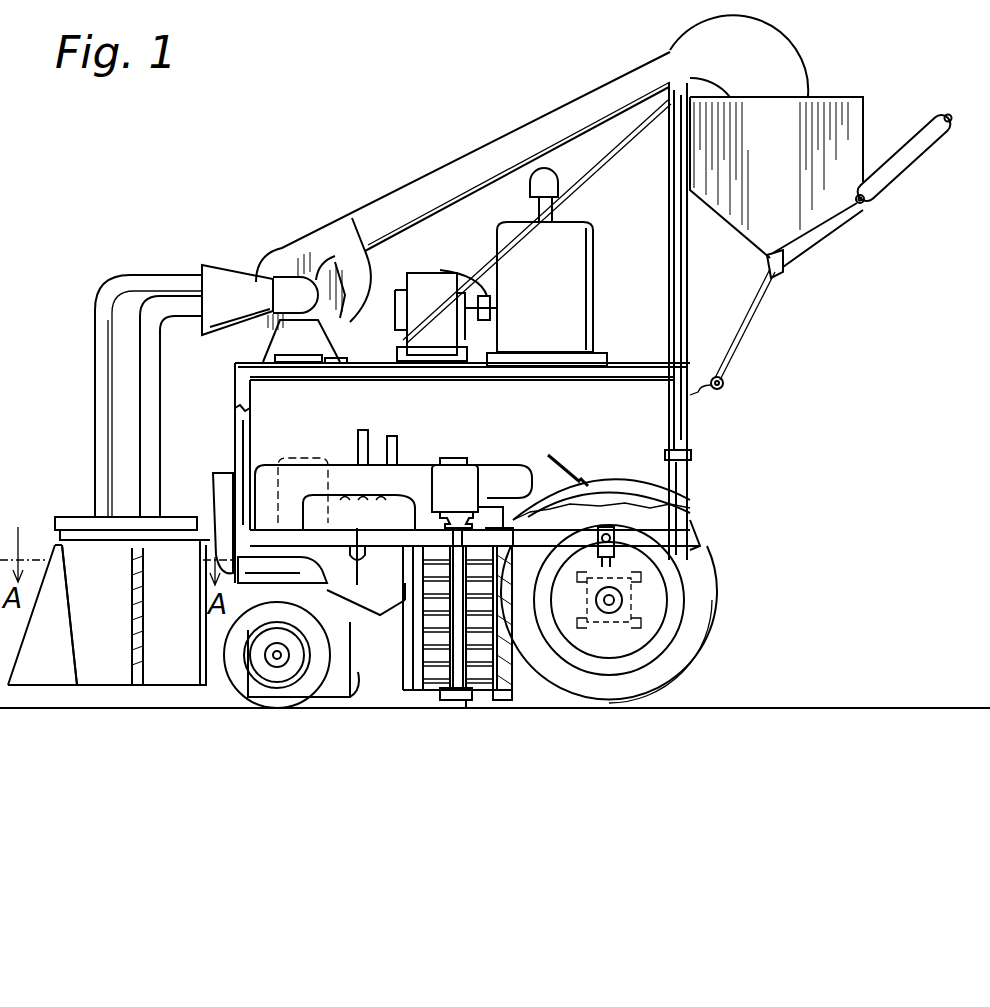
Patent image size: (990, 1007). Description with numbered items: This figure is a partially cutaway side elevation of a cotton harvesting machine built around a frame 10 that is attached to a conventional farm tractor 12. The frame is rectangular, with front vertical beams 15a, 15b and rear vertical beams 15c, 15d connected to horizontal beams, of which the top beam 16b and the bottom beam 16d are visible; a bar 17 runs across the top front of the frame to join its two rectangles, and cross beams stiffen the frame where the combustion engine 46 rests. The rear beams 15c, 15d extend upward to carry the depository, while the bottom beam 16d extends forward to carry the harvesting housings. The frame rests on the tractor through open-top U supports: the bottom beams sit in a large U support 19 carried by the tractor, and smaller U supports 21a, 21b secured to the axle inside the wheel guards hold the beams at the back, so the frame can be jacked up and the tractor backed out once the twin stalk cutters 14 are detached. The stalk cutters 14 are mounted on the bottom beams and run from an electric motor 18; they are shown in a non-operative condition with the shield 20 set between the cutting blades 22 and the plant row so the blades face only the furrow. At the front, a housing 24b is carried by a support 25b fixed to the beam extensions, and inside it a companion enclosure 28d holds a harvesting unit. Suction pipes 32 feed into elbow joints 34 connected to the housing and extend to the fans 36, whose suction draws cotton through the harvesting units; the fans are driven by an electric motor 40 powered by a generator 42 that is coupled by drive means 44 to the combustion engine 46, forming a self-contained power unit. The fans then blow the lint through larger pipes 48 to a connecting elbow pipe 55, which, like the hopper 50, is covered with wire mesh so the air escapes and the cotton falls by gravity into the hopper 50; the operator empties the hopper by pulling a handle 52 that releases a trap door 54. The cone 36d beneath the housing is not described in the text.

The frame 10 is at (690, 438).
The farm tractor 12 is at (419, 457).
The twin stalk cutters 14 is at (448, 690).
The vertical beam 15a is at (238, 408).
The vertical beam 15b is at (246, 446).
The vertical beam 15c is at (691, 456).
The vertical beam 15d is at (669, 436).
The horizontal beam 16b is at (505, 372).
The horizontal beam 16d is at (470, 558).
The bar 17 is at (256, 371).
The electric motor 18 is at (487, 463).
The U support 19 is at (217, 500).
The shield 20 is at (410, 657).
The U support 21a is at (566, 545).
The U support 21b is at (700, 530).
The cutting blades 22 is at (492, 698).
The housing 24b is at (130, 688).
The support 25b is at (105, 548).
The companion enclosure 28d is at (150, 688).
The suction pipes 32 is at (155, 411).
The elbow joints 34 is at (221, 270).
The fans 36 is at (352, 302).
The nozzle cone 36d is at (50, 688).
The electric motor 40 is at (320, 248).
The generator 42 is at (425, 270).
The drive means 44 is at (482, 292).
The combustion engine 46 is at (585, 272).
The pipes 48 is at (510, 138).
The hopper 50 is at (866, 100).
The handle 52 is at (920, 161).
The trap door 54 is at (812, 240).
The elbow pipe 55 is at (768, 52).